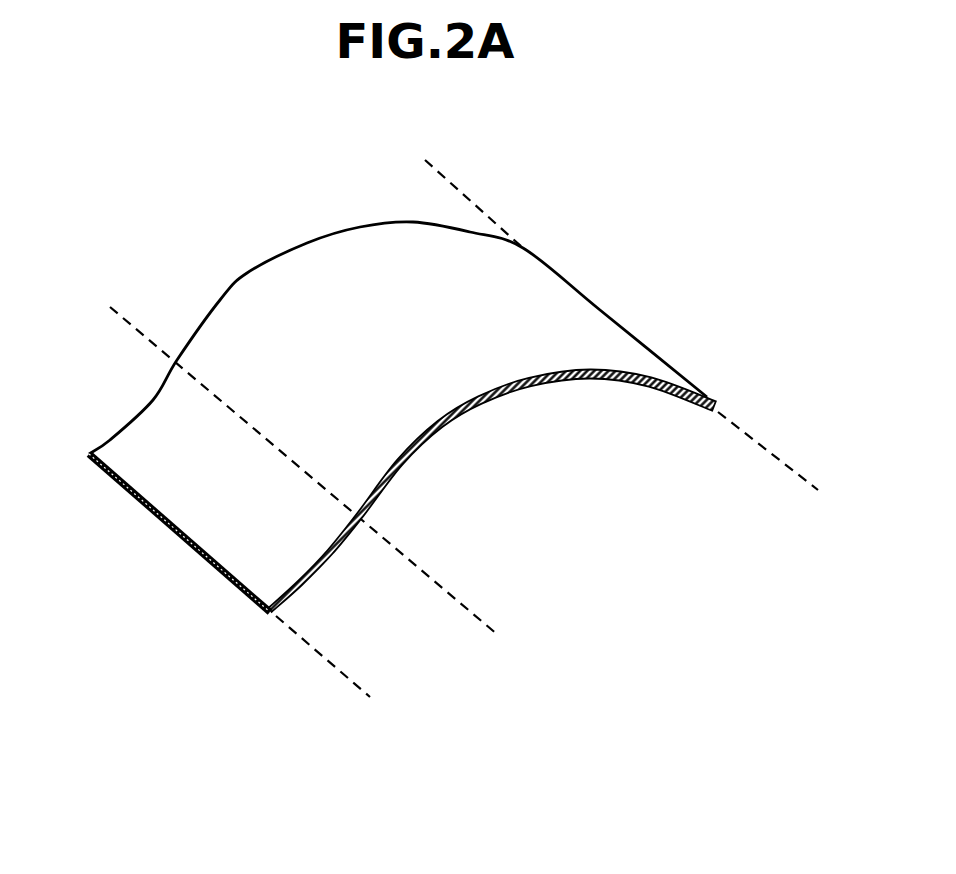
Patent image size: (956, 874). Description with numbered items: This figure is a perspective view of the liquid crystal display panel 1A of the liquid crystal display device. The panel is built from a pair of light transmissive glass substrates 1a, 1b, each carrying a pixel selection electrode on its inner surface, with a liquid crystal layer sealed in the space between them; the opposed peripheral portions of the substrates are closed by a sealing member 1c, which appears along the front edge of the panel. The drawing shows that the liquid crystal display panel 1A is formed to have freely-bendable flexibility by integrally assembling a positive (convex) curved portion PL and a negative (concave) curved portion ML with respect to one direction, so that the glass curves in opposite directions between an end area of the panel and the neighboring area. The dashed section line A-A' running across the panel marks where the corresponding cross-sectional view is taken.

The liquid crystal display panel 1A is at (453, 430).
The light transmissive glass substrate 1a is at (383, 247).
The light transmissive glass substrate 1b is at (468, 415).
The sealing member 1c is at (270, 613).
The line A-A' A is at (122, 582).
The line A- A' is at (693, 284).
The negative (concave) curved portion ML is at (473, 615).
The positive (convex) curved portion PL is at (785, 470).